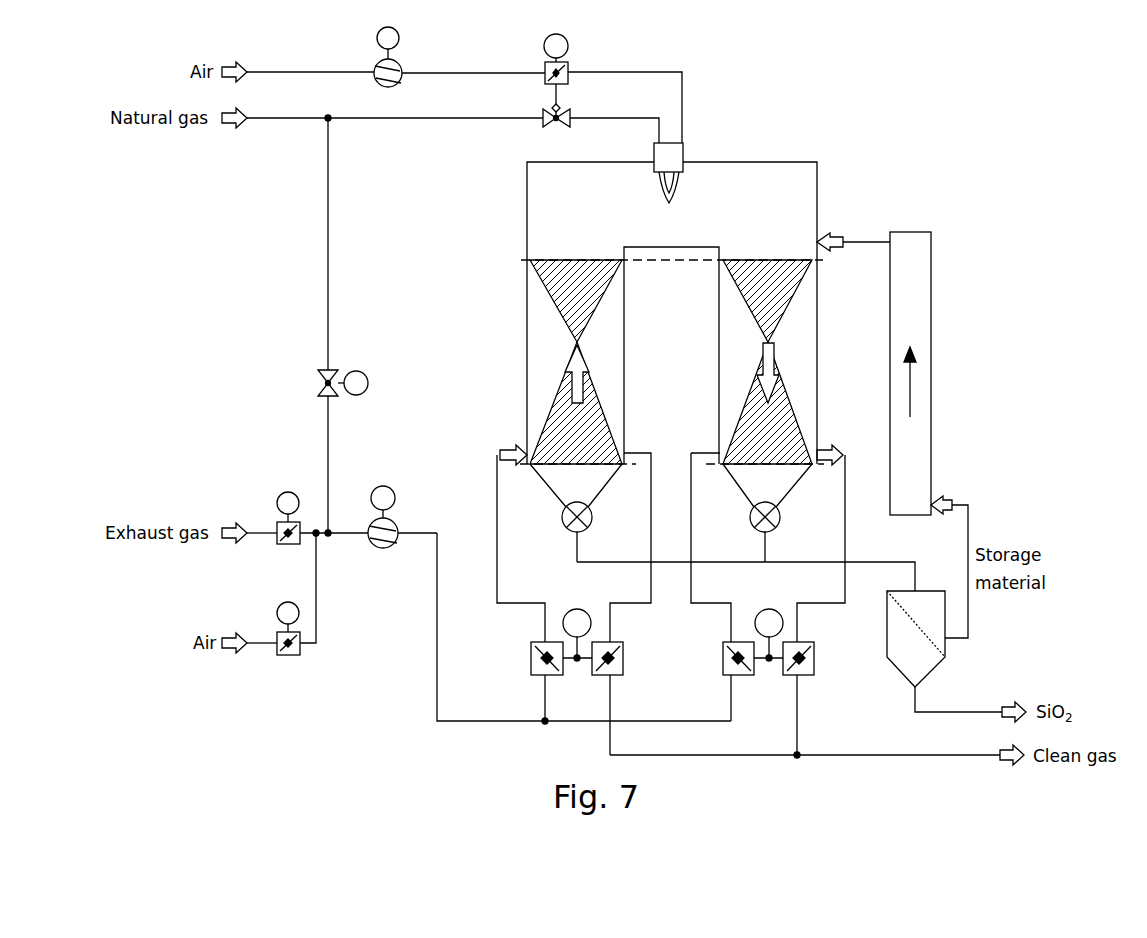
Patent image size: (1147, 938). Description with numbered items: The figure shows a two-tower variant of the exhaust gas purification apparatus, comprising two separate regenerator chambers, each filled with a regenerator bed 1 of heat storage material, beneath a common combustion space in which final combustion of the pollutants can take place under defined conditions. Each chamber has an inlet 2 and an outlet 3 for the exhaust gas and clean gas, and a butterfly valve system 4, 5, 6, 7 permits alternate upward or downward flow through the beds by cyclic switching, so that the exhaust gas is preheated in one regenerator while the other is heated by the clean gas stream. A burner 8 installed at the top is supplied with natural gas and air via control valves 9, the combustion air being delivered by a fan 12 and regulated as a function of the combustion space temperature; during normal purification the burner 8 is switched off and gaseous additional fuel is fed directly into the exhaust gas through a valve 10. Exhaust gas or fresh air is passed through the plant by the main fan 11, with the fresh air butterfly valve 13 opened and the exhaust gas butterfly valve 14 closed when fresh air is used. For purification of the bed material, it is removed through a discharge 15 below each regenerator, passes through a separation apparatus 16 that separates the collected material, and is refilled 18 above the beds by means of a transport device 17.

The regenerator bed 1 is at (671, 362).
The inlet 2 is at (610, 528).
The outlet 3 is at (731, 528).
The butterfly valve 4 is at (531, 681).
The butterfly valve 5 is at (609, 682).
The butterfly valve 6 is at (725, 681).
The butterfly valve 7 is at (799, 682).
The burner 8 is at (682, 161).
The control valves 9 is at (599, 88).
The valve for additional fuel feed 10 is at (346, 368).
The main fan 11 is at (402, 532).
The fan 12 is at (459, 57).
The butterfly valve 13 is at (289, 647).
The butterfly valve 14 is at (286, 505).
The discharge 15 is at (738, 546).
The separation apparatus 16 is at (939, 651).
The transport device 17 is at (910, 373).
The refill 18 is at (853, 229).